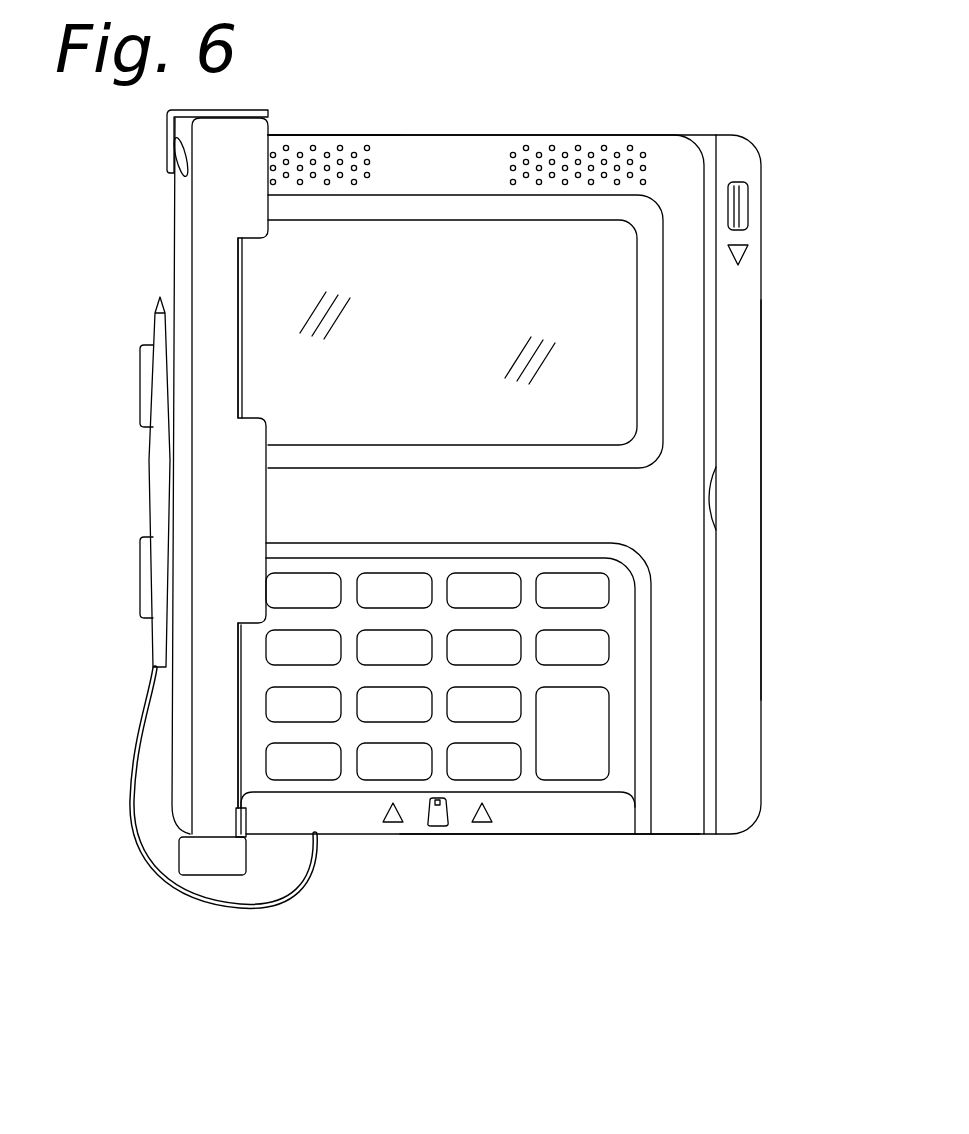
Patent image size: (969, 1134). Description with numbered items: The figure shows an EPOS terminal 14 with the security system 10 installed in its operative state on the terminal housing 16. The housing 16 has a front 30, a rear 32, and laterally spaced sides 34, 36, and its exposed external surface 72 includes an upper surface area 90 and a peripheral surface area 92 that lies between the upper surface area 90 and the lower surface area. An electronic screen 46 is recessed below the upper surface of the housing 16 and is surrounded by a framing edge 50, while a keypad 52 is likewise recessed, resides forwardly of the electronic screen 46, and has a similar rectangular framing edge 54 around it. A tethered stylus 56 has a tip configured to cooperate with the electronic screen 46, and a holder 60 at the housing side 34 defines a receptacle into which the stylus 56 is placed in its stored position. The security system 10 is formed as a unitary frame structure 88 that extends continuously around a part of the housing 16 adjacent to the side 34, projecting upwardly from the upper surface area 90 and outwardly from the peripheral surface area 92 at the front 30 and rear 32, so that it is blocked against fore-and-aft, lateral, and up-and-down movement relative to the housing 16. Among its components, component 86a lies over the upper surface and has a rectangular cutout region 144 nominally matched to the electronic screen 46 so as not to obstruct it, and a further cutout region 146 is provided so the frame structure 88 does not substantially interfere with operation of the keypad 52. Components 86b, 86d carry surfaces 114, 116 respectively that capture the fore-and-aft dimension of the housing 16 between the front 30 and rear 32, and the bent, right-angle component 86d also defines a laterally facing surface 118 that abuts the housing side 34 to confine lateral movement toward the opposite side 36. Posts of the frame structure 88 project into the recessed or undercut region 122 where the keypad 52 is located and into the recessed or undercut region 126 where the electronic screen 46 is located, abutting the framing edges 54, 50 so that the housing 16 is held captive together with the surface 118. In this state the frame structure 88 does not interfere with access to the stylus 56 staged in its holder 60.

The security system 10 is at (217, 345).
The terminal 14 is at (587, 856).
The housing 16 is at (542, 835).
The front 30 is at (333, 836).
The rear 32 is at (330, 135).
The side 34 is at (174, 280).
The side 36 is at (761, 437).
The electronic screen 46 is at (448, 337).
The framing edge 50 is at (655, 259).
The keypad 52 is at (426, 630).
The framing edge 54 is at (641, 732).
The tethered stylus 56 is at (152, 470).
The holder 60 is at (137, 531).
The exposed external surface 72 is at (621, 410).
The component 86a is at (222, 500).
The component 86b is at (218, 862).
The component 86d is at (172, 143).
The frame structure 88 is at (220, 642).
The upper surface area 90 is at (348, 497).
The peripheral surface area 92 is at (761, 637).
The surface 114 is at (207, 836).
The surface 116 is at (270, 144).
The laterally facing surface 118 is at (184, 157).
The recessed/undercut region 122 is at (623, 642).
The recessed/undercut region 126 is at (479, 278).
The rectangular cutout region 144 is at (241, 276).
The cutout region 146 is at (244, 738).